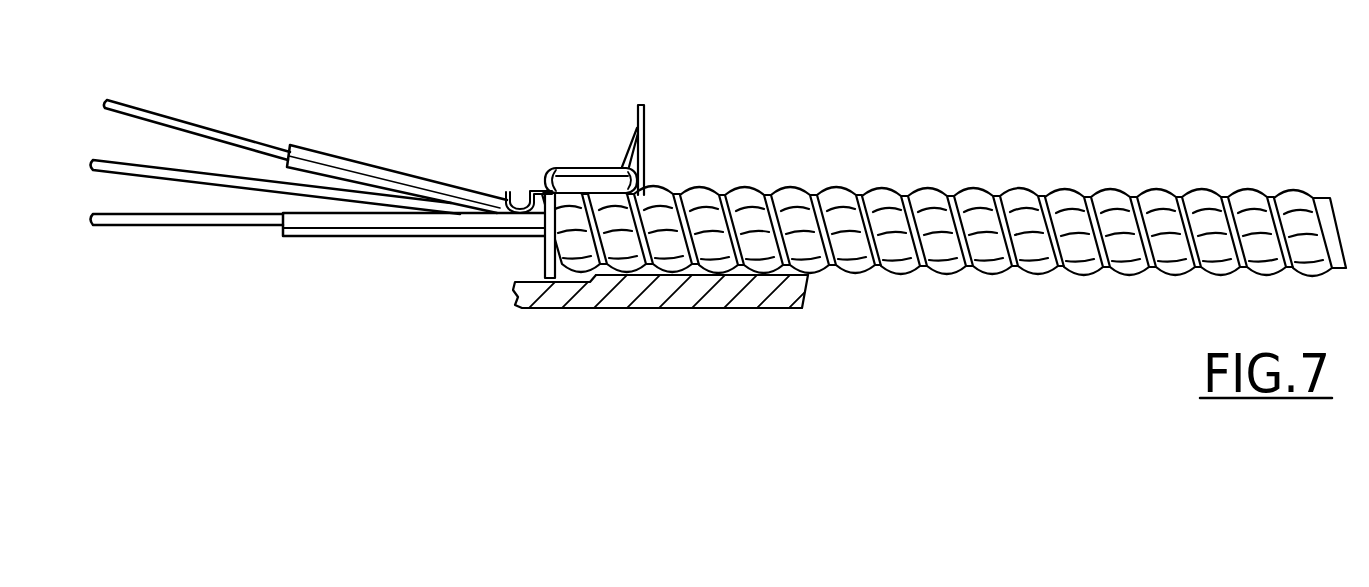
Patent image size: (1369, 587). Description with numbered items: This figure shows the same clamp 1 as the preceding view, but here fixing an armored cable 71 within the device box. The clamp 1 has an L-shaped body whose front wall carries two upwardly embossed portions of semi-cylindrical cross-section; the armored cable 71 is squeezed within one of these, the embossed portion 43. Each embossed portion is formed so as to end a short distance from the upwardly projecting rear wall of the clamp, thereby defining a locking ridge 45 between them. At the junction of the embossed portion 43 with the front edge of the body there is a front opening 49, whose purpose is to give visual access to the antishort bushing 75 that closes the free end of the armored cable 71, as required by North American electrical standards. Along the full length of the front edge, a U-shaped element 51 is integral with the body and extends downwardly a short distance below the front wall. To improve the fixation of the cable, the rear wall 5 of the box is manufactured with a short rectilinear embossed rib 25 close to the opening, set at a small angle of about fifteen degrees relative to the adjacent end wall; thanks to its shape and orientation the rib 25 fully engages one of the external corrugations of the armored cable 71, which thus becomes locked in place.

The clamp 1 is at (692, 96).
The rear wall of the box 5 is at (778, 298).
The embossed rib 25 is at (597, 276).
The embossed portion 43 is at (589, 165).
The locking ridge 45 is at (646, 183).
The front opening 49 is at (539, 154).
The U-shaped element 51 is at (522, 192).
The armored cable 71 is at (1024, 173).
The antishort bushing 75 is at (548, 260).